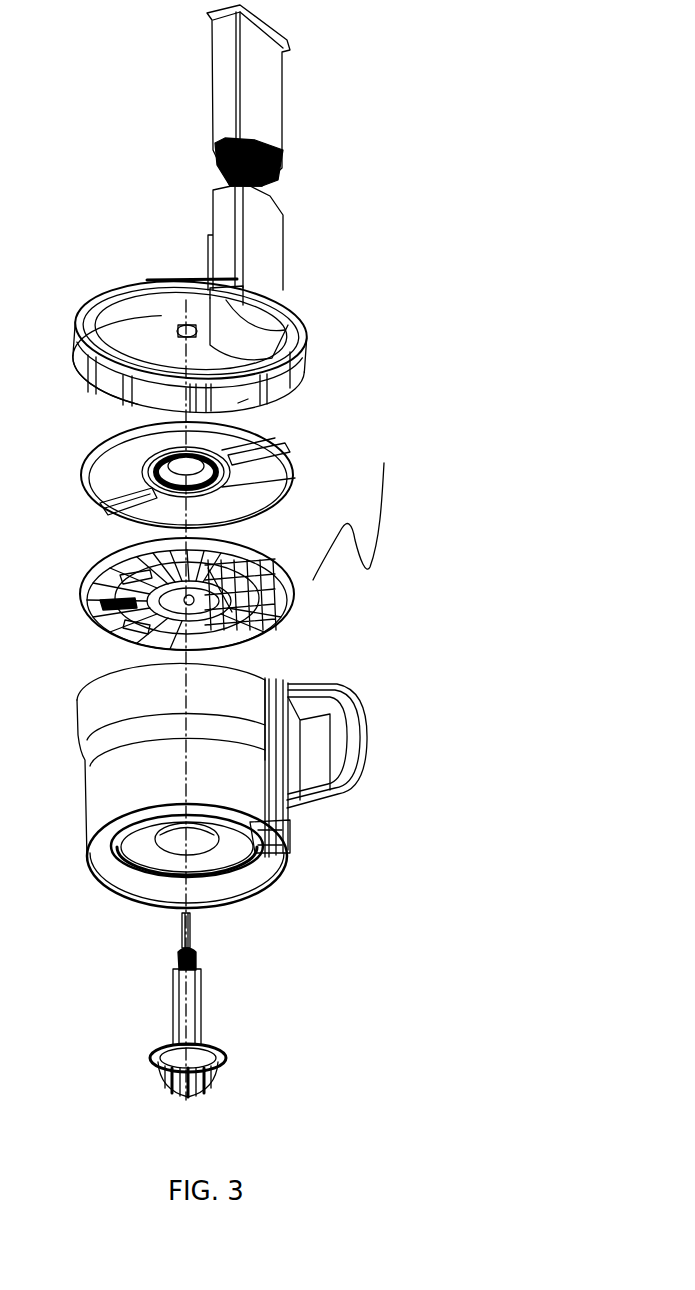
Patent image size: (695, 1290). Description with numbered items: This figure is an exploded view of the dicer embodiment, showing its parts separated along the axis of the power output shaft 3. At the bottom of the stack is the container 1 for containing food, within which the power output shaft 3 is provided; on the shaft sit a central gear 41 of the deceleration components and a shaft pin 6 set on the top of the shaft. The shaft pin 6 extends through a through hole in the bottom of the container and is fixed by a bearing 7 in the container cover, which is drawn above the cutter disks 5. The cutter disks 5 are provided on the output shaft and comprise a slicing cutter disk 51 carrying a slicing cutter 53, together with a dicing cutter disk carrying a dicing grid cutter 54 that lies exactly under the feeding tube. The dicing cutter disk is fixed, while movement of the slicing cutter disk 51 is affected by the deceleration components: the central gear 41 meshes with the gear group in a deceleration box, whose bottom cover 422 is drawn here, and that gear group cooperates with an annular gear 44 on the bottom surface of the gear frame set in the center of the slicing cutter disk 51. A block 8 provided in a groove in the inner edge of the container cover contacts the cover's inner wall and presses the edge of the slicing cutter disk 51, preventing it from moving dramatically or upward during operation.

The container 1 is at (112, 799).
The power output shaft 3 is at (190, 1022).
The cutter disks 5 is at (355, 511).
The shaft pin 6 is at (190, 924).
The bearing 7 is at (183, 327).
The block 8 is at (238, 403).
The central gear 41 is at (197, 960).
The annular gear 44 is at (148, 508).
The slicing cutter disk 51 is at (232, 505).
The slicing cutter 53 is at (248, 463).
The dicing grid cutter 54 is at (278, 602).
The bottom cover 422 is at (110, 625).